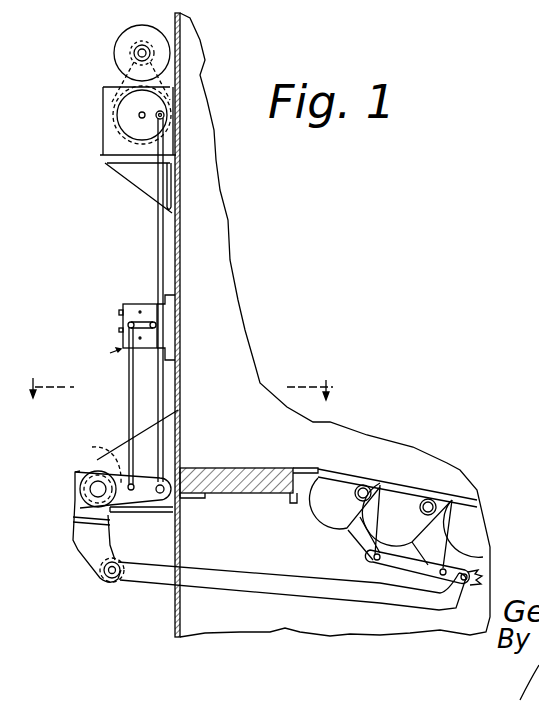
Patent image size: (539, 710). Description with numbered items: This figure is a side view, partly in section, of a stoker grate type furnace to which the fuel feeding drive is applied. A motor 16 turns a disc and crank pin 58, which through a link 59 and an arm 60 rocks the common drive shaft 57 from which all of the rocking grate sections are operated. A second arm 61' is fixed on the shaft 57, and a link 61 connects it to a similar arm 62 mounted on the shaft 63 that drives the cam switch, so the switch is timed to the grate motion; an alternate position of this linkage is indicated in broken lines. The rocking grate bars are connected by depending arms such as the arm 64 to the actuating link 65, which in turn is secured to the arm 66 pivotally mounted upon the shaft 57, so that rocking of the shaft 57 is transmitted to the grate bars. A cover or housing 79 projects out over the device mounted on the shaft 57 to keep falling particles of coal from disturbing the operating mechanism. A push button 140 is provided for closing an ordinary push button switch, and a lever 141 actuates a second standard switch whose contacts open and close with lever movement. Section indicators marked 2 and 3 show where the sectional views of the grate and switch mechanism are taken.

The motor 16 is at (128, 33).
The disc and crank pin 58 is at (130, 125).
The link 59 is at (160, 225).
The shaft 63 is at (152, 318).
The lever 141 is at (119, 312).
The push button 140 is at (119, 330).
The section line 3 is at (105, 357).
The arm 62 is at (150, 330).
The link 61 is at (117, 409).
The second arm 61' is at (92, 462).
The cover or housing 79 is at (118, 445).
The section line 2 is at (179, 389).
The arm 60 is at (145, 497).
The common drive shaft 57 is at (90, 487).
The arm 66 is at (90, 561).
The actuating link 65 is at (243, 586).
The depending arm 64 is at (357, 546).